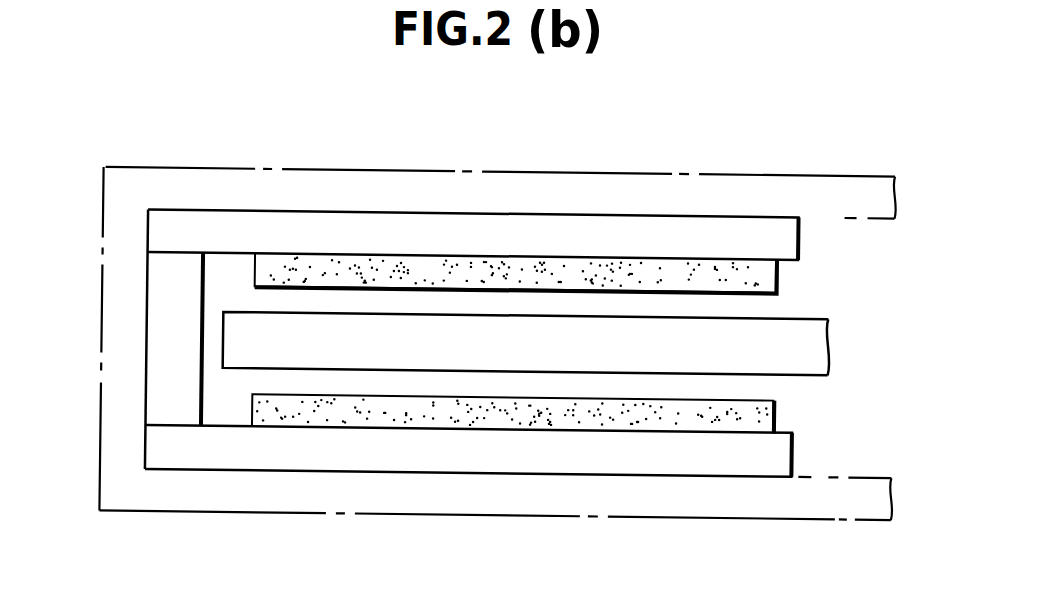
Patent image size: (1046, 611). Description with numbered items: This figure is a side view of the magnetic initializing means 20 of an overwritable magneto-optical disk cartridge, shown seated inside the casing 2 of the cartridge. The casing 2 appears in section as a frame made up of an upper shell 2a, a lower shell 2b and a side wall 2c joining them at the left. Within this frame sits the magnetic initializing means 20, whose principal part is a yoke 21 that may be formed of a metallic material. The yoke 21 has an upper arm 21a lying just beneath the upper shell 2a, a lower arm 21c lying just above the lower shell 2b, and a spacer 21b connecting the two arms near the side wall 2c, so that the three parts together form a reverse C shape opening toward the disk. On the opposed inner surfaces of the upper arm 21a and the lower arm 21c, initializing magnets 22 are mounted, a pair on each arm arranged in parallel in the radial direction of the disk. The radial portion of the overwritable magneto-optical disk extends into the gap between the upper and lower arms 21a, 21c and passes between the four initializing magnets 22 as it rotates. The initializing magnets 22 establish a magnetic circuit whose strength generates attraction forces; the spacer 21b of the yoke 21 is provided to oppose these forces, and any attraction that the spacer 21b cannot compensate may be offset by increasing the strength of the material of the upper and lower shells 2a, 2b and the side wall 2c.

The casing 2 is at (468, 341).
The upper shell 2a is at (495, 170).
The lower shell 2b is at (660, 520).
The side wall 2c is at (100, 388).
The magnetic initializing means 20 is at (476, 332).
The yoke 21 is at (419, 332).
The upper arm 21a is at (592, 225).
The spacer 21b is at (160, 305).
The lower arm 21c is at (490, 462).
The initializing magnet 22 is at (776, 277).